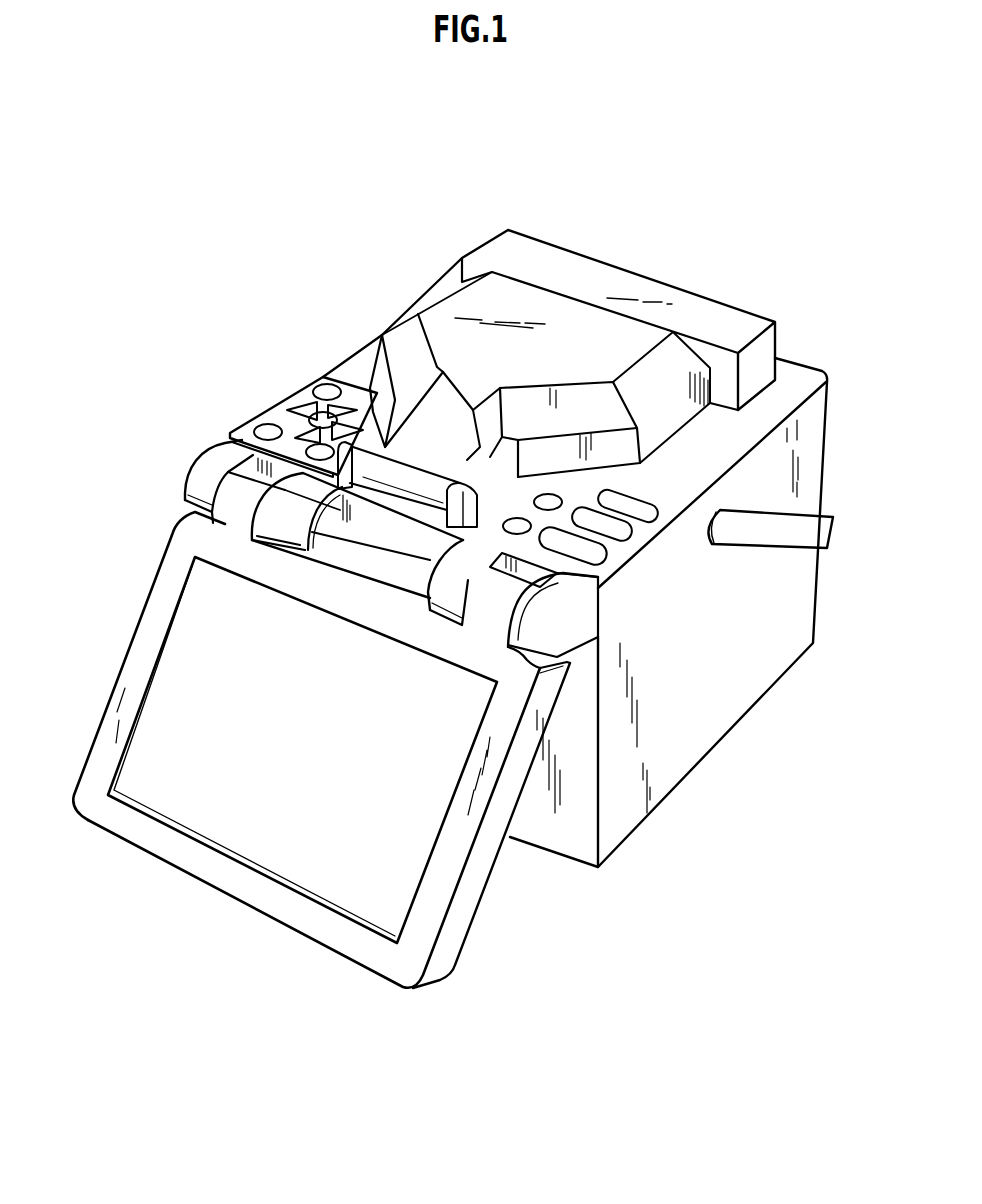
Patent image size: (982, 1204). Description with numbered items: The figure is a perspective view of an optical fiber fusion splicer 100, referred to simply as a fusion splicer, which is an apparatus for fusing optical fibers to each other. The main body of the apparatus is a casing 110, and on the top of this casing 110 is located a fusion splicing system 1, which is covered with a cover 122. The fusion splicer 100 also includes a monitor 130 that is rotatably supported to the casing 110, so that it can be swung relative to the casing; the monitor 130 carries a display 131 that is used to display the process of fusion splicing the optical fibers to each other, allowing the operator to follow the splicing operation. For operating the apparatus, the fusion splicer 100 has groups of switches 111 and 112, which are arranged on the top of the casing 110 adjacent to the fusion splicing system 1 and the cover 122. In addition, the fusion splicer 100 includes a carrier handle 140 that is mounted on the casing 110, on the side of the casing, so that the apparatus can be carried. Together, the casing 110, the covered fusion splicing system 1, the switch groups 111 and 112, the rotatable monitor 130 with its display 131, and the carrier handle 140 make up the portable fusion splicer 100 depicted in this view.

The optical fiber fusion splicer 100 is at (556, 189).
The fusion splicing system 1 is at (418, 295).
The casing 110 is at (793, 382).
The group of switches 111 is at (268, 392).
The group of switches 112 is at (622, 574).
The cover 122 is at (396, 315).
The monitor 130 is at (333, 892).
The display 131 is at (272, 820).
The carrier handle 140 is at (753, 538).